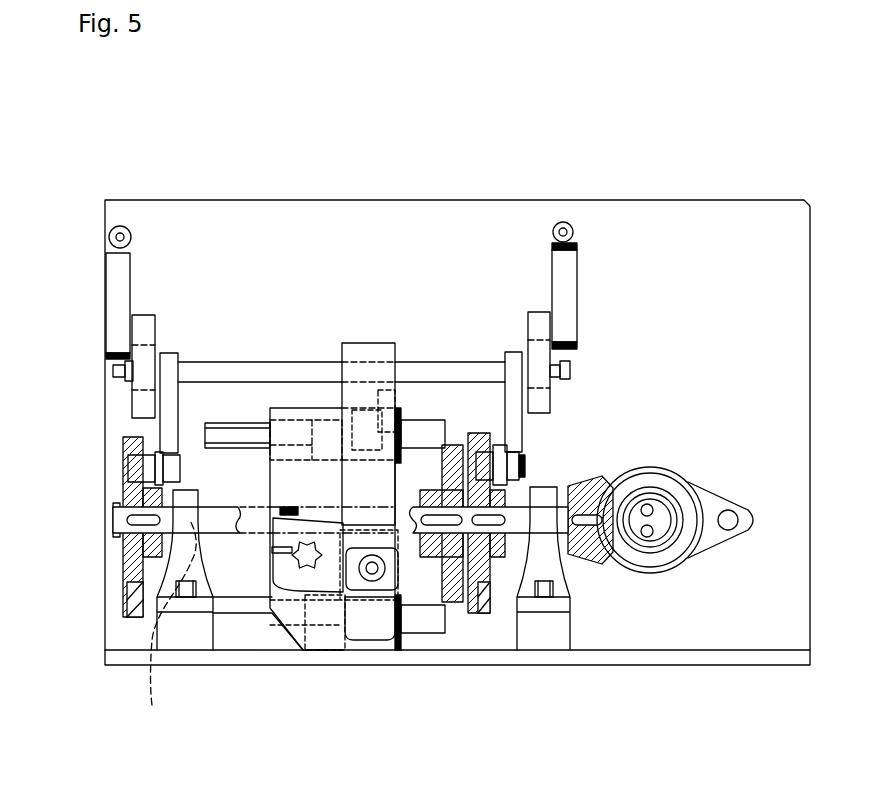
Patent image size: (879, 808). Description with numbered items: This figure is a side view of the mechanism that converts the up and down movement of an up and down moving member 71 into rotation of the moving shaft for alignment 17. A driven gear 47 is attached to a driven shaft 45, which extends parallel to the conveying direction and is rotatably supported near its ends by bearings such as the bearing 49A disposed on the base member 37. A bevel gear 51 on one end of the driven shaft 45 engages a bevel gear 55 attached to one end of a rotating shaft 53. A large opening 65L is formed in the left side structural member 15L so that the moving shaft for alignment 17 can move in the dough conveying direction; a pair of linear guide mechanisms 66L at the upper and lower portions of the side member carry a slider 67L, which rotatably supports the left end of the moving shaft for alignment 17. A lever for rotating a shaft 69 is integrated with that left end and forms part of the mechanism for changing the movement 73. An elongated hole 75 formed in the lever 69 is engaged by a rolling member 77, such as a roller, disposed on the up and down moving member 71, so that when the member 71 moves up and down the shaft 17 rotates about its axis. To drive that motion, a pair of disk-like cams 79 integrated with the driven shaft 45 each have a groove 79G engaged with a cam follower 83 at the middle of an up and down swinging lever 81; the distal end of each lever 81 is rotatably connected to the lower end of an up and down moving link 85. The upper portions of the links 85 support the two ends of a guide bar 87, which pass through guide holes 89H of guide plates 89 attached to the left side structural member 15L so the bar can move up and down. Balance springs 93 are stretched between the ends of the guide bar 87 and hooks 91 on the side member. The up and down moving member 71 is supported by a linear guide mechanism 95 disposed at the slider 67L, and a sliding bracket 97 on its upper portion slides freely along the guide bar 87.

The left side structural member 15L is at (350, 228).
The moving shaft for alignment 17 is at (305, 622).
The base member 37 is at (745, 662).
The driven shaft 45 is at (222, 537).
The driven gear 47 is at (452, 446).
The bearing 49A is at (545, 600).
The bevel gear 51 is at (588, 568).
The rotating shaft 53 is at (650, 503).
The bevel gear 55 is at (652, 573).
The large opening 65L is at (210, 605).
The linear guide mechanisms 66L is at (226, 412).
The slider 67L is at (308, 585).
The lever for rotating a shaft 69 is at (327, 582).
The up and down moving member 71 is at (362, 390).
The mechanism for changing the movement 73 is at (420, 590).
The elongated hole 75 is at (362, 598).
The rolling member 77 is at (372, 546).
The disk-like cam 79 is at (125, 552).
The groove 79G is at (130, 600).
The up and down swinging lever 81 is at (130, 458).
The cam follower 83 is at (145, 470).
The up and down moving link 85 is at (172, 425).
The guide bar 87 is at (297, 372).
The guide plate 89 is at (133, 318).
The guide hole 89H is at (140, 410).
The hook 91 is at (118, 226).
The balance spring 93 is at (108, 258).
The linear guide mechanism 95 is at (386, 385).
The sliding bracket 97 is at (352, 390).